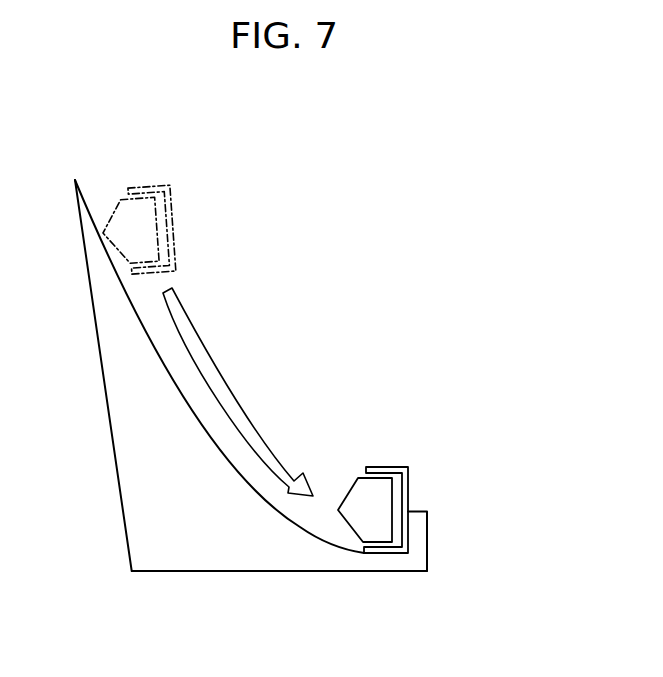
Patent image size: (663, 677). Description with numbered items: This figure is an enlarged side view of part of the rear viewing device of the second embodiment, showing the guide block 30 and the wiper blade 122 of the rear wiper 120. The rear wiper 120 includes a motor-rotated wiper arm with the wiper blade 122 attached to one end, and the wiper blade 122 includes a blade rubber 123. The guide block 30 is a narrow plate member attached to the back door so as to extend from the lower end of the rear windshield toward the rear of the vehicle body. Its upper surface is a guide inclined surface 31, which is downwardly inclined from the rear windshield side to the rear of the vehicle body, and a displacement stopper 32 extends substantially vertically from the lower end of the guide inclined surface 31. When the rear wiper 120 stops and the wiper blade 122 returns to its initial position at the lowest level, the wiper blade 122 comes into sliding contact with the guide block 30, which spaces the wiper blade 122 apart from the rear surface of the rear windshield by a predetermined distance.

The guide block 30 is at (198, 552).
The guide inclined surface 31 is at (310, 533).
The displacement stopper 32 is at (420, 533).
The rear wiper 120 is at (375, 242).
The wiper blade 122 is at (410, 493).
The blade rubber 123 is at (377, 490).